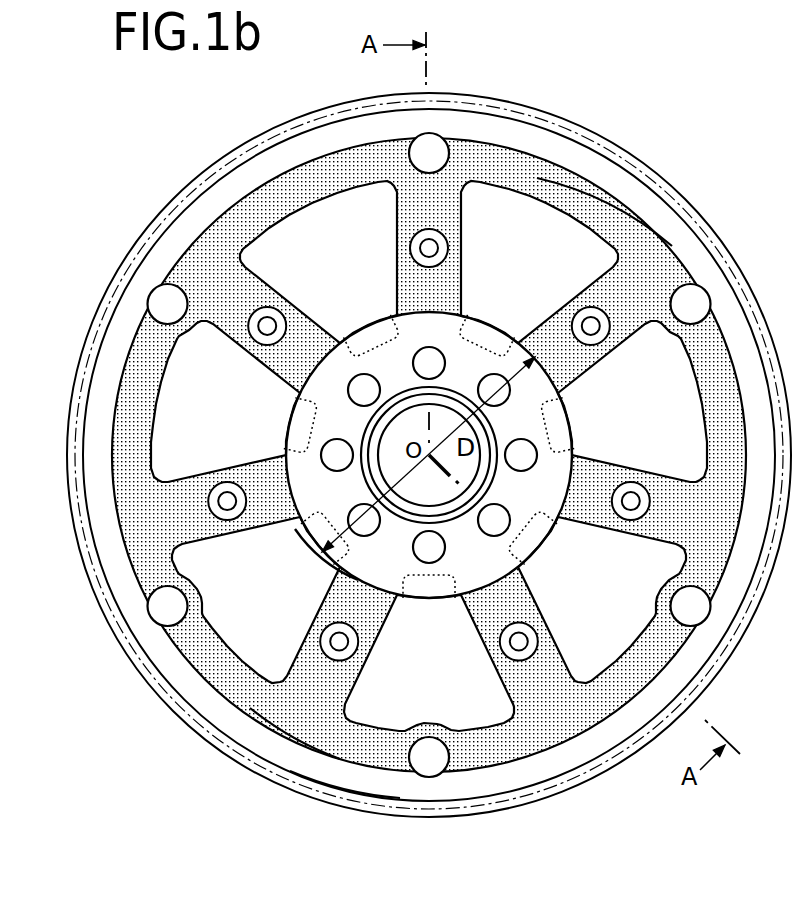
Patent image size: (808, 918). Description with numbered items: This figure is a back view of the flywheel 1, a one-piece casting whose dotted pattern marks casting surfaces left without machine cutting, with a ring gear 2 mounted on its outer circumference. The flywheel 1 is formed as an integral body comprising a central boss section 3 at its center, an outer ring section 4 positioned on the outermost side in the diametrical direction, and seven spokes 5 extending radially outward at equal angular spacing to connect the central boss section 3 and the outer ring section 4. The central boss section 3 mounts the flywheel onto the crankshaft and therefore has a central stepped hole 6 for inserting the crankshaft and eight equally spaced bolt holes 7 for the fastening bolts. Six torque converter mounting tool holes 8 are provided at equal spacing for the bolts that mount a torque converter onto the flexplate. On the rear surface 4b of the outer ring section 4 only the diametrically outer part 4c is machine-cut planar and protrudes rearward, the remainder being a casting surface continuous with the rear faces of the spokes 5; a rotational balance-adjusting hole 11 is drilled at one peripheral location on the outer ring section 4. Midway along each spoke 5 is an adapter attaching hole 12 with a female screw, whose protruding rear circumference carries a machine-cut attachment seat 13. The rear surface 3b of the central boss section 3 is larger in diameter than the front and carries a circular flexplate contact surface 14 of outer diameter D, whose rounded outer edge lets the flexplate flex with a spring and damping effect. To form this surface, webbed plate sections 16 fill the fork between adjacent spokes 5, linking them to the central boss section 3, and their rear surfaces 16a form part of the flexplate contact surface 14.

The flywheel 1 is at (505, 160).
The ring gear 2 is at (241, 146).
The central boss section 3 is at (466, 378).
The rear surface of the central boss section 3b is at (328, 496).
The outer ring section 4 is at (602, 205).
The rear surface of the outer ring section 4b is at (302, 736).
The machine-cut part of the rear surface 4c is at (338, 788).
The spoke 5 is at (260, 288).
The central stepped hole 6 is at (417, 414).
The bolt hole 7 is at (360, 392).
The torque converter mounting tool hole 8 is at (163, 303).
The rotational balance-adjusting hole 11 is at (643, 650).
The adapter attaching hole 12 is at (264, 334).
The attachment seat 13 is at (247, 325).
The flexplate contact surface 14 is at (333, 518).
The webbed plate section 16 is at (375, 456).
The rear surface of the plate section 16a is at (301, 426).